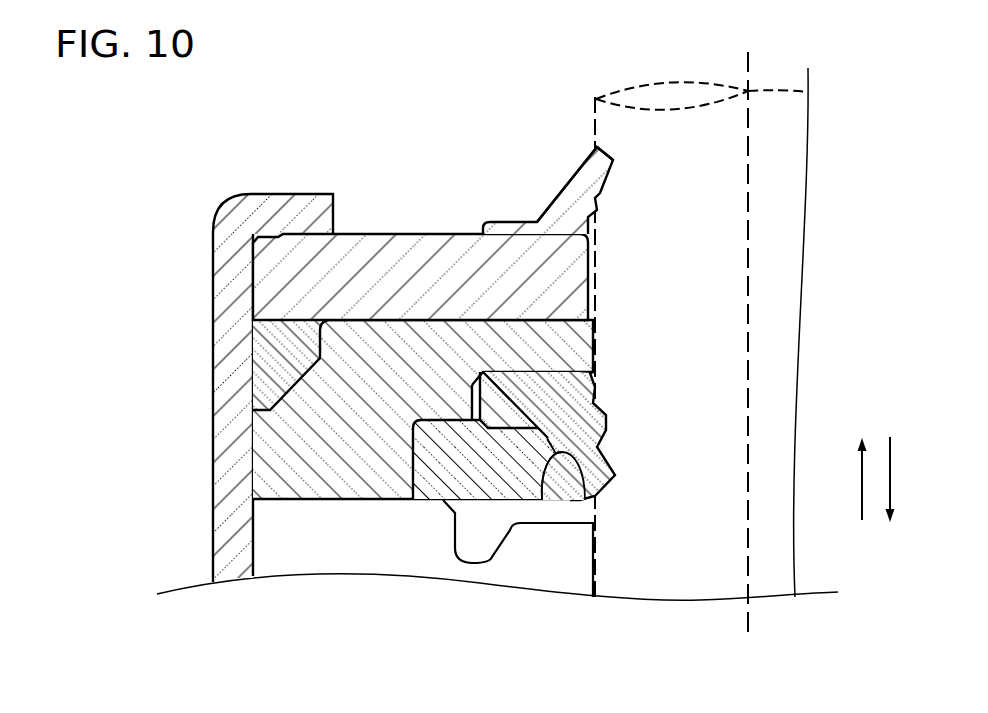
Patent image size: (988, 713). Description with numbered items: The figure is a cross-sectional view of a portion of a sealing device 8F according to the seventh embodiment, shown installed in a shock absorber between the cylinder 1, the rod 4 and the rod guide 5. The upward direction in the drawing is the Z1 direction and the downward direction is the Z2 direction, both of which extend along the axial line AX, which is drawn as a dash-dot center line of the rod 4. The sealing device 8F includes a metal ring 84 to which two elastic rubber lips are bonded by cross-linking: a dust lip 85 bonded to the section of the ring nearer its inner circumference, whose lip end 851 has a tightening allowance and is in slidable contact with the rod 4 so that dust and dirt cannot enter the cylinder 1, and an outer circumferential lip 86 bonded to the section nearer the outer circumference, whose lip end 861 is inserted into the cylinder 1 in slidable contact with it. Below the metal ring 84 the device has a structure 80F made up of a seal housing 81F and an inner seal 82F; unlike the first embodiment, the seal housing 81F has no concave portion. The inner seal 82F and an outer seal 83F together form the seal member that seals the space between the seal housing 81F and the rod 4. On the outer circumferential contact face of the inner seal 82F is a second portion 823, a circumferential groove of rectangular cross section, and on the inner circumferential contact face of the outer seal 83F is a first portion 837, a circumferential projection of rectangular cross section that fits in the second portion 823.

The cylinder 1 is at (282, 185).
The rod 4 is at (590, 112).
The rod guide 5 is at (246, 531).
The sealing device 8F is at (70, 212).
The structure 80F is at (130, 397).
The seal housing 81F is at (246, 409).
The inner seal 82F is at (470, 391).
The outer seal 83F is at (403, 438).
The metal ring 84 is at (243, 287).
The dust lip 85 is at (474, 216).
The lip end 851 is at (597, 148).
The outer circumferential lip 86 is at (247, 346).
The lip end 861 is at (270, 396).
The second portion 823 is at (542, 500).
The first portion 837 is at (595, 500).
The axial line AX is at (745, 326).
The Z1 direction Z1 is at (864, 469).
The Z2 direction Z2 is at (894, 495).